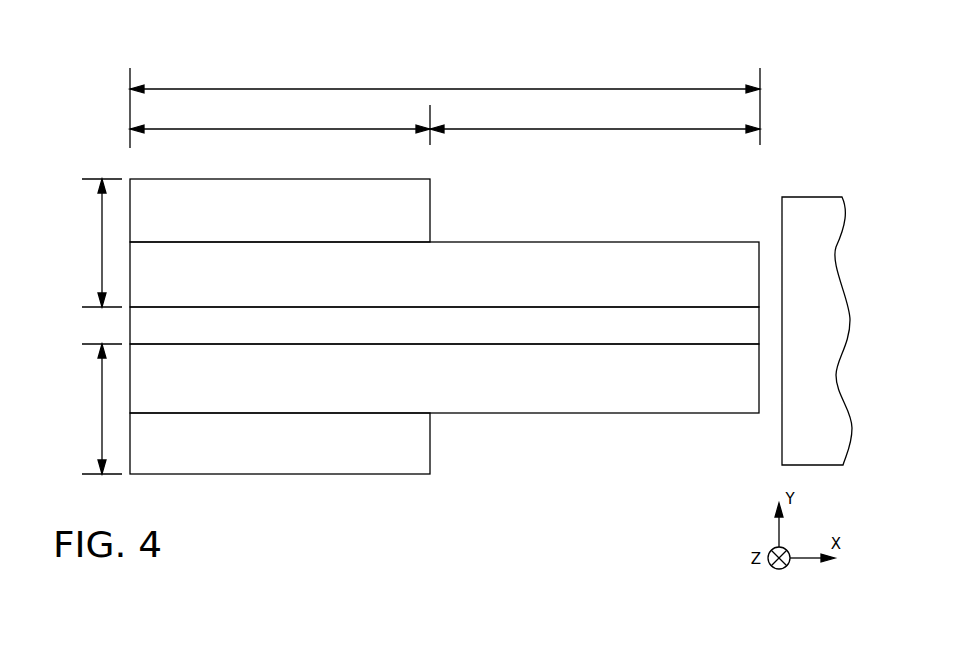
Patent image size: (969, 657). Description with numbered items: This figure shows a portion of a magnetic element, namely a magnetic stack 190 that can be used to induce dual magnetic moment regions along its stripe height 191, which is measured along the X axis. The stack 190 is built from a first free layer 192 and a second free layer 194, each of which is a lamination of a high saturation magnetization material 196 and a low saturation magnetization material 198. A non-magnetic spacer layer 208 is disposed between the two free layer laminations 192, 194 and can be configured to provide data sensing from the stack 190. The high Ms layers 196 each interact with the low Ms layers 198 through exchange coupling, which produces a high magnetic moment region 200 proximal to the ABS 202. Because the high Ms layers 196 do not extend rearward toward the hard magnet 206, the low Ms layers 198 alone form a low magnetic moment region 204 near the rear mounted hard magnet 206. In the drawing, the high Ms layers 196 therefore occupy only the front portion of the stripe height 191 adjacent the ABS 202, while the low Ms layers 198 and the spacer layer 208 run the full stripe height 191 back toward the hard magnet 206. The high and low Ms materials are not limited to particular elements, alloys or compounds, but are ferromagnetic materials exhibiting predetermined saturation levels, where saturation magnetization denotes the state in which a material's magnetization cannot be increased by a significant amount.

The magnetic stack 190 is at (732, 52).
The stripe height 191 is at (445, 80).
The first free layer 192 is at (95, 243).
The second free layer 194 is at (95, 409).
The high saturation magnetization material 196 is at (280, 326).
The low saturation magnetization material 198 is at (444, 327).
The high magnetic moment region 200 is at (280, 140).
The ABS 202 is at (49, 174).
The low magnetic moment region 204 is at (595, 140).
The hard magnet 206 is at (817, 331).
The non-magnetic spacer layer 208 is at (444, 325).